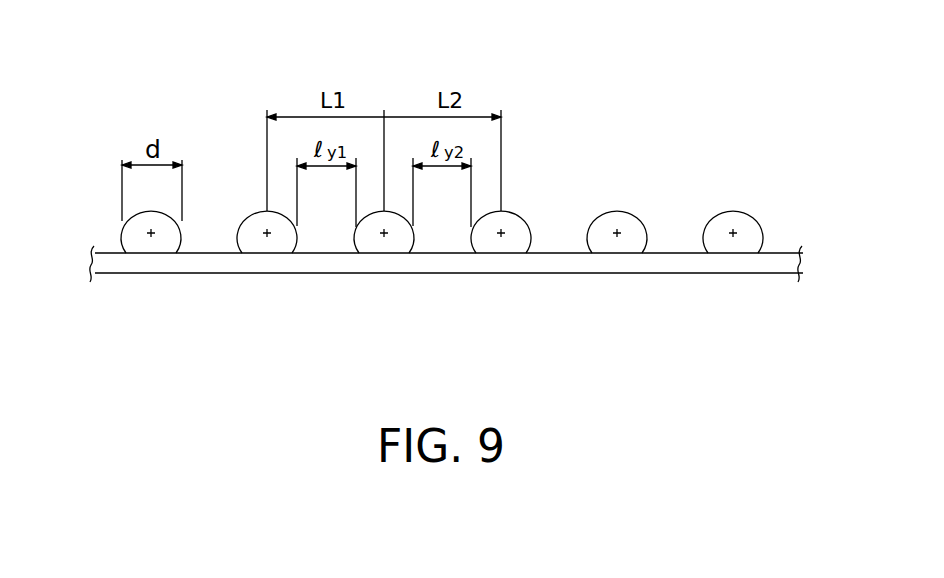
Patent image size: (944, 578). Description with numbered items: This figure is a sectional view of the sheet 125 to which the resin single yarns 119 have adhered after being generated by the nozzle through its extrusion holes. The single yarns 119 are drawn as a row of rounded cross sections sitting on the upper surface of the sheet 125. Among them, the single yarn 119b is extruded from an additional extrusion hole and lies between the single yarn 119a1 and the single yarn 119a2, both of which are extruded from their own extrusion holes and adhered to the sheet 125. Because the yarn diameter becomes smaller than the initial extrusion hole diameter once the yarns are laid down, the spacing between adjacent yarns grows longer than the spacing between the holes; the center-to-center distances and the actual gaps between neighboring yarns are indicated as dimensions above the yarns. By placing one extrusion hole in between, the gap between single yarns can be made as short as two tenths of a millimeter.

The single yarns 119 is at (641, 200).
The single yarn 119a1 is at (269, 252).
The single yarn 119b is at (383, 252).
The single yarn 119a2 is at (502, 252).
The sheet 125 is at (654, 262).